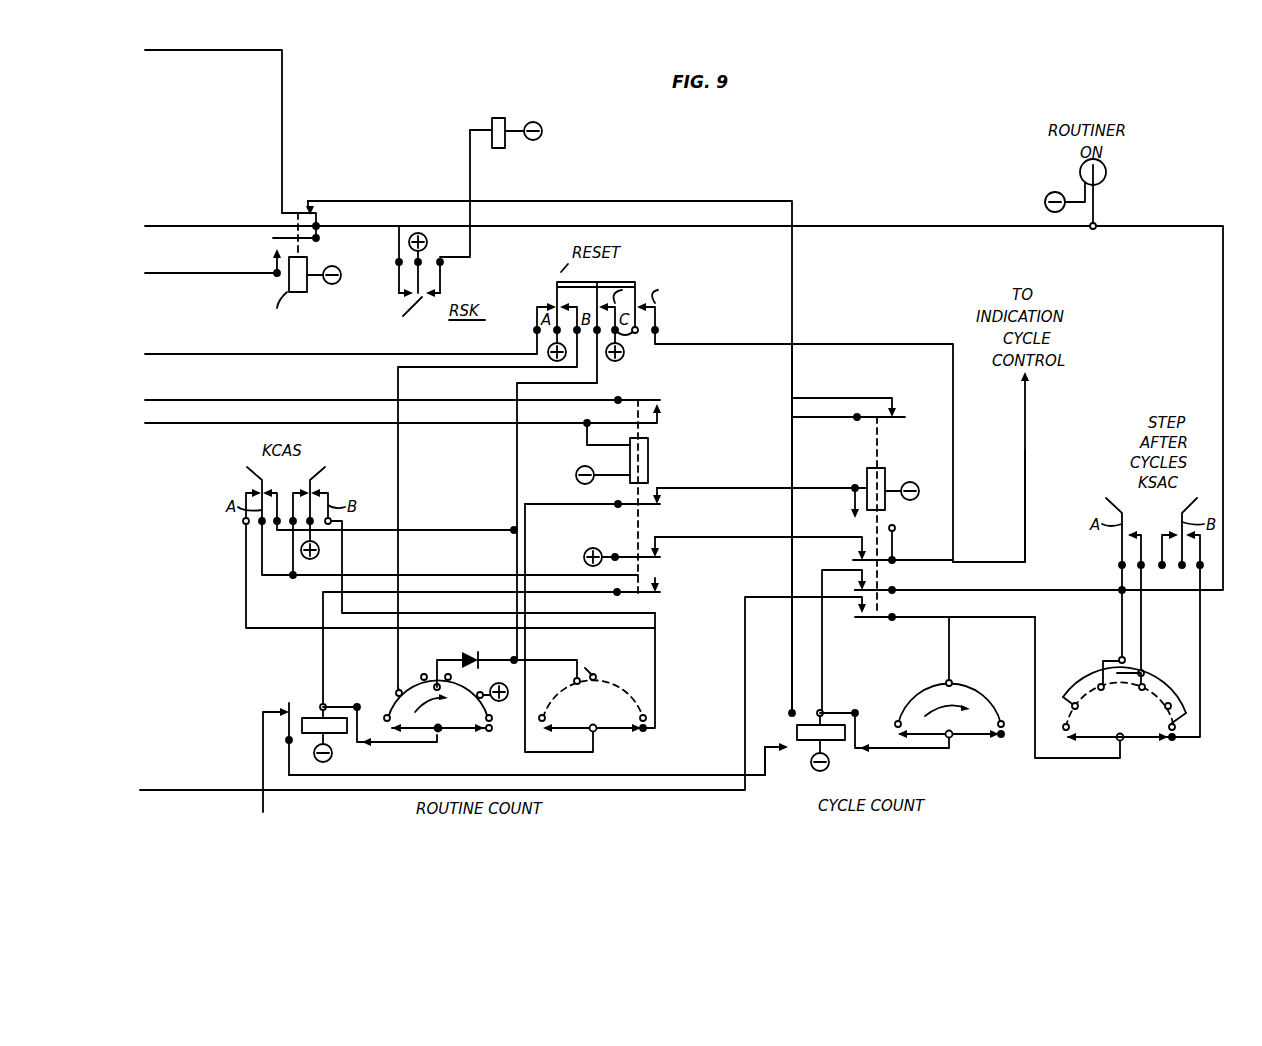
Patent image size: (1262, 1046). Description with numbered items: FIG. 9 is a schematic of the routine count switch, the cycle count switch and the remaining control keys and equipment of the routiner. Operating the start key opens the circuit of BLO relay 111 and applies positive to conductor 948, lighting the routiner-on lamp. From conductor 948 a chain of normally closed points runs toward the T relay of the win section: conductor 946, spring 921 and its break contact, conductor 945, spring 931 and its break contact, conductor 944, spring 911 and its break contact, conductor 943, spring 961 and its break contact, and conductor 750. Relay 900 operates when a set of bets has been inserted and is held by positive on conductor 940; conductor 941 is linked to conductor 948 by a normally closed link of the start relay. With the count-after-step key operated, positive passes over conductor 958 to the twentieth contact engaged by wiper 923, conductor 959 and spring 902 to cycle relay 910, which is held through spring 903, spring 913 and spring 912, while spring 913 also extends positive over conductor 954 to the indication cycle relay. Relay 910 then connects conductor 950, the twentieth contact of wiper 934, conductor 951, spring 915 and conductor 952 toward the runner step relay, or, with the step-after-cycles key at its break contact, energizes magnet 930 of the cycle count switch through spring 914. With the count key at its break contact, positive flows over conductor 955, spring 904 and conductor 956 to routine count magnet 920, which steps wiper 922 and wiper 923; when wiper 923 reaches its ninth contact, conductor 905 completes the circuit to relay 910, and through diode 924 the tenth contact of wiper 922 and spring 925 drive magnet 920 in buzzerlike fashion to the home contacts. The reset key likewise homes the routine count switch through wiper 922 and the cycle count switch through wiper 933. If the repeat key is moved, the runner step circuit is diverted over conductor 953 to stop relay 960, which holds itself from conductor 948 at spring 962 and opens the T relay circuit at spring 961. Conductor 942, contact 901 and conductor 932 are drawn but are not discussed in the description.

The conductor 750 is at (282, 115).
The conductor 948 is at (198, 222).
The conductor 943 is at (620, 201).
The spring 961 is at (300, 198).
The spring 962 is at (265, 240).
The conductor 953 is at (196, 275).
The stop relay 960 is at (307, 262).
The BLO relay 111 is at (503, 118).
The conductor 942 is at (196, 353).
The conductor 952 is at (517, 456).
The conductor 954 is at (1025, 428).
The conductor 944 is at (792, 468).
The conductor 940 is at (196, 397).
The conductor 941 is at (196, 422).
The contact 901 is at (648, 400).
The relay 900 is at (648, 455).
The conductor 959 is at (525, 540).
The spring 902 is at (660, 508).
The spring 903 is at (660, 560).
The spring 904 is at (660, 596).
The conductor 905 is at (472, 530).
The conductor 955 is at (472, 574).
The conductor 956 is at (323, 600).
The conductor 958 is at (655, 690).
The spring 921 is at (289, 712).
The conductor 946 is at (263, 800).
The conductor 945 is at (724, 778).
The routine count magnet 920 is at (330, 718).
The spring 925 is at (357, 748).
The wiper 922 is at (462, 730).
The diode 924 is at (465, 642).
The wiper 923 is at (610, 735).
The spring 911 is at (900, 420).
The cycle relay 910 is at (885, 478).
The spring 912 is at (855, 528).
The spring 913 is at (855, 558).
The spring 914 is at (880, 590).
The spring 915 is at (880, 617).
The conductor 951 is at (1035, 645).
The spring 931 is at (795, 750).
The cycle count switch magnet 930 is at (830, 725).
The conductor 932 is at (858, 755).
The wiper 933 is at (968, 737).
The conductor 950 is at (1200, 645).
The wiper 934 is at (1140, 742).